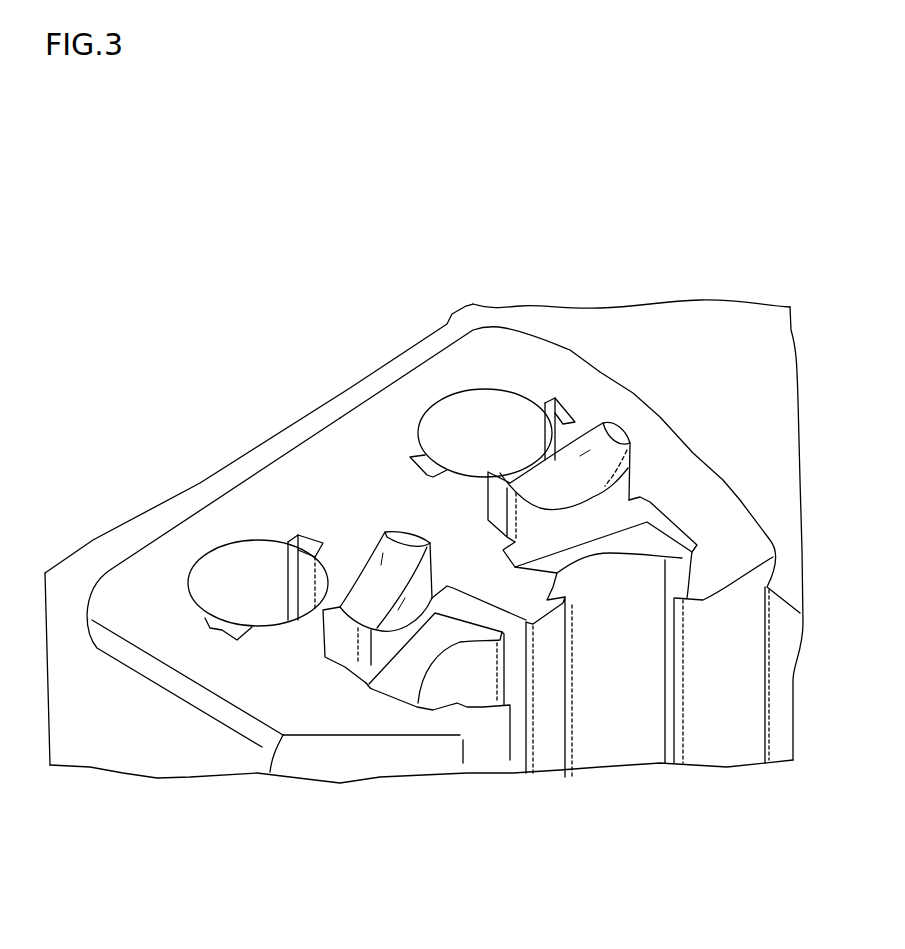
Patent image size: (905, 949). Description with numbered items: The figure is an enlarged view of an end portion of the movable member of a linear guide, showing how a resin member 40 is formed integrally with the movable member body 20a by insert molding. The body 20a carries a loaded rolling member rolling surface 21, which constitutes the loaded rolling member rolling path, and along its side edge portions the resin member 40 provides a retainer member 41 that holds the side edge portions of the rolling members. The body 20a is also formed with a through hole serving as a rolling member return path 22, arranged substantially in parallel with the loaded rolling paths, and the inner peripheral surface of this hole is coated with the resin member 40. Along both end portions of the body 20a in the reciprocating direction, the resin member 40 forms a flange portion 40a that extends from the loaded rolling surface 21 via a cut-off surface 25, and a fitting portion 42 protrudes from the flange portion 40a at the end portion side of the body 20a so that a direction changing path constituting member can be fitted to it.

The main body of the movable member 20a is at (708, 340).
The loaded rolling member rolling surface 21 is at (465, 662).
The rolling member return path 22 is at (193, 602).
The cut-off surface 25 is at (407, 670).
The resin member 40 is at (211, 664).
The flange portion 40a is at (313, 707).
The retainer member 41 is at (470, 717).
The fitting portion 42 is at (387, 580).